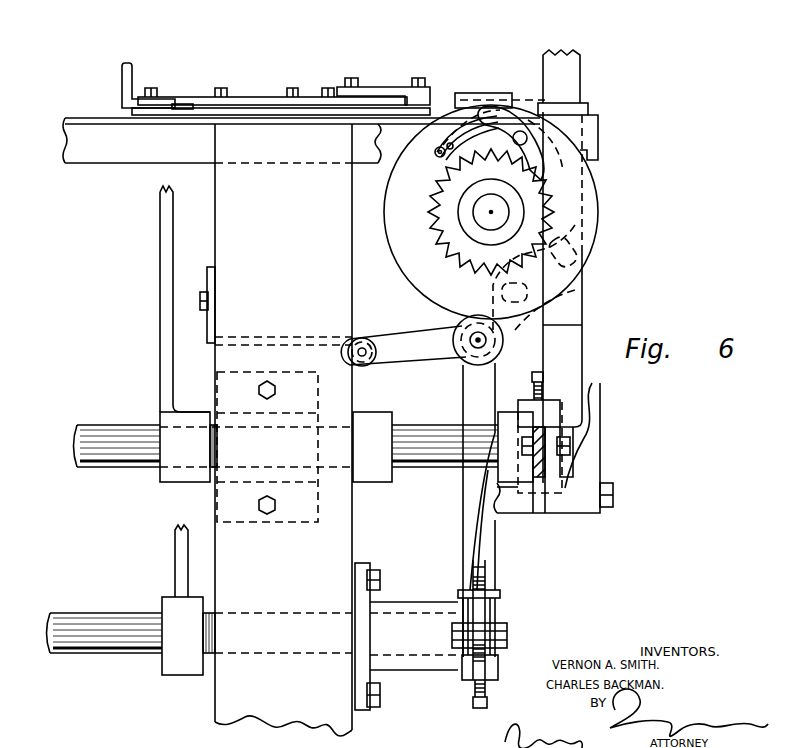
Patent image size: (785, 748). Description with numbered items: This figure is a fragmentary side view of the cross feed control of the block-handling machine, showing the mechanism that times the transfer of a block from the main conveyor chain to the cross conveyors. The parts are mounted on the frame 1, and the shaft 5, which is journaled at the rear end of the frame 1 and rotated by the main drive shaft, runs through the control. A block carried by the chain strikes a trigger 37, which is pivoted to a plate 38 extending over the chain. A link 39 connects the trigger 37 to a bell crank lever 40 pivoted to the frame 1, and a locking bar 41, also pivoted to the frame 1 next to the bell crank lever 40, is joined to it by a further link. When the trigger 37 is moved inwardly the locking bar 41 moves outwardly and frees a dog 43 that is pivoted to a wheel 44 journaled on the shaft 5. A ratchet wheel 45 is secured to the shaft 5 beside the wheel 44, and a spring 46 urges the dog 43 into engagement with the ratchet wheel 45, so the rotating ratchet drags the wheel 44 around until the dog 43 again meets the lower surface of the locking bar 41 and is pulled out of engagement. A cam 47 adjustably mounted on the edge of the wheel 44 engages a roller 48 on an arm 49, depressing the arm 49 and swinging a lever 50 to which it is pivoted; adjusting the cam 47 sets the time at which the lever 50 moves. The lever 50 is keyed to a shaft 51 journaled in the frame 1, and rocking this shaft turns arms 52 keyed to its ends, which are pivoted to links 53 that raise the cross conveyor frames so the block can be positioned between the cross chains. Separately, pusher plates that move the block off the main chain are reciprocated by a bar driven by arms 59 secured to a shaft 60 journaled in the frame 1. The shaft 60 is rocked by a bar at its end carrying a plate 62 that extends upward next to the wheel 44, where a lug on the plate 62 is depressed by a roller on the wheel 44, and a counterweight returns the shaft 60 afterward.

The frame 1 is at (215, 165).
The shaft 5 is at (493, 210).
The trigger 37 is at (122, 80).
The plate 38 is at (157, 115).
The link 39 is at (188, 104).
The bell crank lever 40 is at (253, 106).
The locking bar 41 is at (462, 93).
The dog 43 is at (543, 152).
The wheel 44 is at (588, 220).
The ratchet wheel 45 is at (452, 242).
The spring 46 is at (437, 152).
The cam 47 is at (563, 297).
The roller 48 is at (478, 362).
The arm 49 is at (470, 482).
The lever 50 is at (480, 640).
The shaft 51 is at (132, 638).
The arm 52 is at (190, 660).
The link 53 is at (180, 558).
The arm 59 is at (172, 345).
The shaft 60 is at (125, 448).
The plate 62 is at (563, 360).